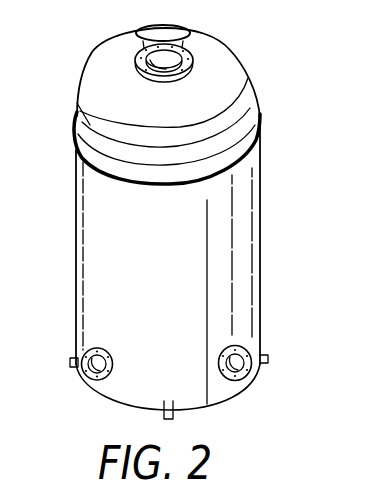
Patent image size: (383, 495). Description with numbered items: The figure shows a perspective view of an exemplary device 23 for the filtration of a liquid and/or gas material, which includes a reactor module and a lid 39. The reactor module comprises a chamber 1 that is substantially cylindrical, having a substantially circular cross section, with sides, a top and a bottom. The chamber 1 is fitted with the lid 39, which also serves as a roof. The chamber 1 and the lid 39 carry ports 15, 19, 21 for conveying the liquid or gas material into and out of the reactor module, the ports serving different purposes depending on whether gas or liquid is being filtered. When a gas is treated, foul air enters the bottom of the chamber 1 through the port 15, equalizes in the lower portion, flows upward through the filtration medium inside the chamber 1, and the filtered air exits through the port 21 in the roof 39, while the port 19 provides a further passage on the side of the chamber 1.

The chamber 1 is at (261, 211).
The port 15 is at (84, 375).
The port 19 is at (253, 361).
The port 21 is at (192, 49).
The device 23 is at (279, 272).
The lid 39 is at (228, 95).